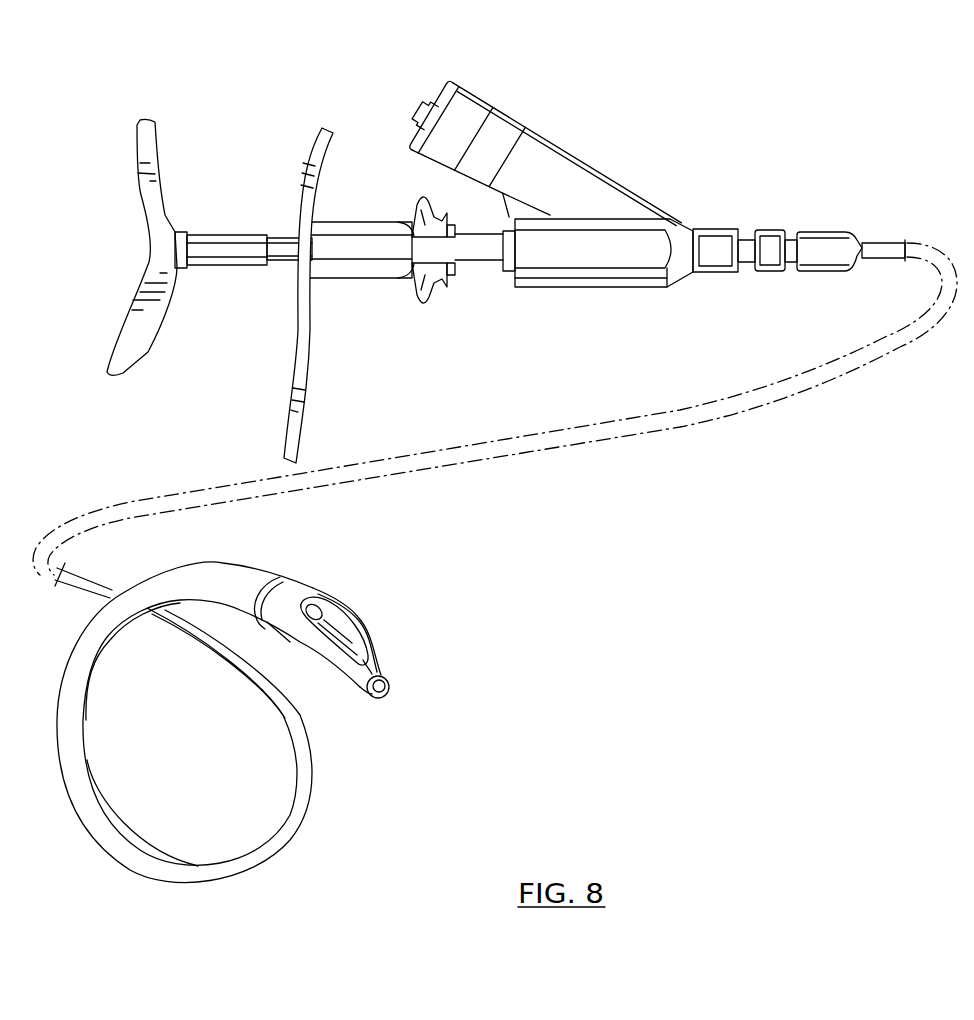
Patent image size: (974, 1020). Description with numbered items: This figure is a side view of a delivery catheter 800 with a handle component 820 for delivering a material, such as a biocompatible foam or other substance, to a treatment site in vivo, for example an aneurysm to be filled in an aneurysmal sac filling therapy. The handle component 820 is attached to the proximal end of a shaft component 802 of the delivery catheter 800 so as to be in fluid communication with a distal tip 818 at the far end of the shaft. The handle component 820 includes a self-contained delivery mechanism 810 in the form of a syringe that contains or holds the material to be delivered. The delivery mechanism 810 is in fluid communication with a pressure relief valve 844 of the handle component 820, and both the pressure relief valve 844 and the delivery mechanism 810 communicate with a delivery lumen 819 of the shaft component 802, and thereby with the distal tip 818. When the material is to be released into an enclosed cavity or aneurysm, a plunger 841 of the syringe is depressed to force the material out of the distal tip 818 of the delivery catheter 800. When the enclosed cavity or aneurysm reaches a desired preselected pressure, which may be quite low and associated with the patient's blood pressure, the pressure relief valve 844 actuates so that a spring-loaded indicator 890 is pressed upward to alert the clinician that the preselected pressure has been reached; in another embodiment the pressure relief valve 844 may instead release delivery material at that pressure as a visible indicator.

The delivery catheter 800 is at (776, 146).
The shaft component 802 is at (878, 242).
The delivery mechanism 810 is at (399, 201).
The distal tip 818 is at (310, 588).
The delivery lumen 819 is at (348, 620).
The handle component 820 is at (640, 160).
The plunger 841 is at (220, 253).
The pressure relief valve 844 is at (496, 118).
The spring-loaded indicator 890 is at (417, 109).